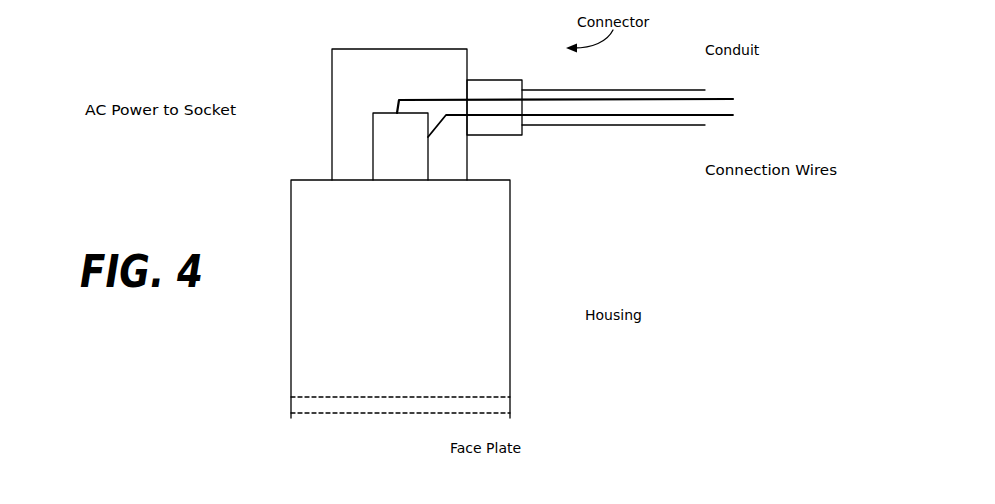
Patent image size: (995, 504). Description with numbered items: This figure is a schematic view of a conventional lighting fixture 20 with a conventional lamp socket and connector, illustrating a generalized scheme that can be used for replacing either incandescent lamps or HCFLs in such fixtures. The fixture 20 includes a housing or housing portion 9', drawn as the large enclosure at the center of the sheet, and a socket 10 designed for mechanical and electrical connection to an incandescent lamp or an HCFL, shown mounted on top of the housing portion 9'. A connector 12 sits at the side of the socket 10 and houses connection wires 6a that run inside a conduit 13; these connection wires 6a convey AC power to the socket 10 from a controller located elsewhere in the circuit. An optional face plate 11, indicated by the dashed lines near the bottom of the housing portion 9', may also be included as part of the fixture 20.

The fixture 20 is at (195, 407).
The socket 10 is at (385, 158).
The housing portion 9' is at (428, 299).
The face plate 11 is at (351, 405).
The connector 12 is at (502, 78).
The conduit 13 is at (620, 90).
The connection wires 6a is at (627, 100).